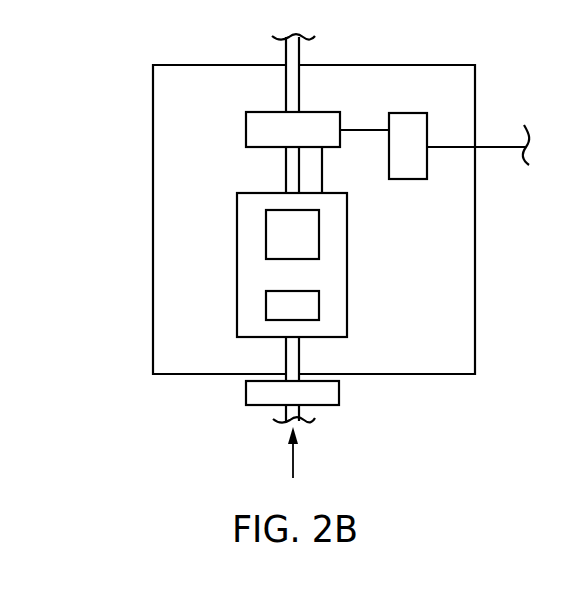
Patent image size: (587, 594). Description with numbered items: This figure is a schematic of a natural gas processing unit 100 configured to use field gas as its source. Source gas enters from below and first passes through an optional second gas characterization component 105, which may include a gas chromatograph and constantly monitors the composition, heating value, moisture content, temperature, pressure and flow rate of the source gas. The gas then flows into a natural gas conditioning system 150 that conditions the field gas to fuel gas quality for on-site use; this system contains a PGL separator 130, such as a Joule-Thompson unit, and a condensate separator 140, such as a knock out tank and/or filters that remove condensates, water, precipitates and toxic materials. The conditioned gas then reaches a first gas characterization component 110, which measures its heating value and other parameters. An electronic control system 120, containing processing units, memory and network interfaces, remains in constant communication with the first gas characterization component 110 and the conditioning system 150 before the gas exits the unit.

The natural gas processing unit 100 is at (127, 178).
The second gas characterization component 105 is at (248, 388).
The first gas characterization component 110 is at (243, 117).
The electronic control system 120 is at (412, 115).
The PGL separator 130 is at (275, 229).
The condensate separator 140 is at (319, 300).
The natural gas conditioning system 150 is at (237, 282).